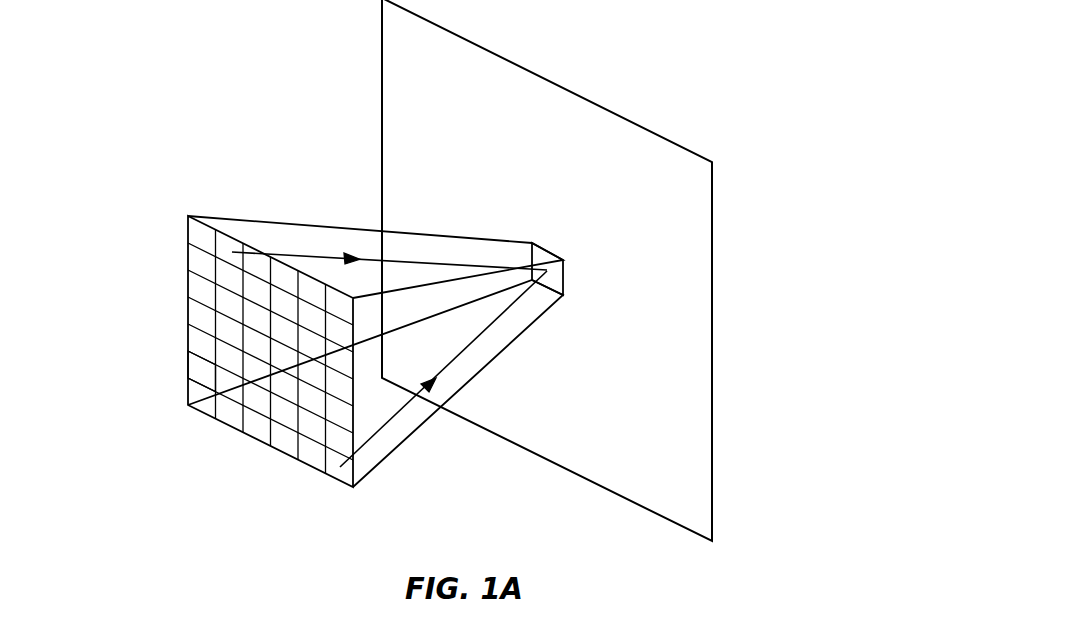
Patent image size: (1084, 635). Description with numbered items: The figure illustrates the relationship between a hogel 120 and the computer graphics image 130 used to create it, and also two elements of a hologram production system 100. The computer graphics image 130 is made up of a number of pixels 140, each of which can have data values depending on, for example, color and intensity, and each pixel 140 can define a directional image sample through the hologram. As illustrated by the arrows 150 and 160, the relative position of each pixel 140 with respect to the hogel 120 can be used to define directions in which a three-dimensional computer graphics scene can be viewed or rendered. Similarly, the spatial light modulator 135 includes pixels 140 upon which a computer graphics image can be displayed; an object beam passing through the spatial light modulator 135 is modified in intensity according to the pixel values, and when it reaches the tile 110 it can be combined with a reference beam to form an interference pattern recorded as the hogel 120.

The hologram production system 100 is at (185, 47).
The tile 110 is at (712, 510).
The hogel 120 is at (563, 273).
The computer graphics image 130 is at (187, 233).
The spatial light modulator 135 is at (187, 288).
The pixel 140 is at (200, 372).
The arrow 150 is at (303, 253).
The arrow 160 is at (398, 415).